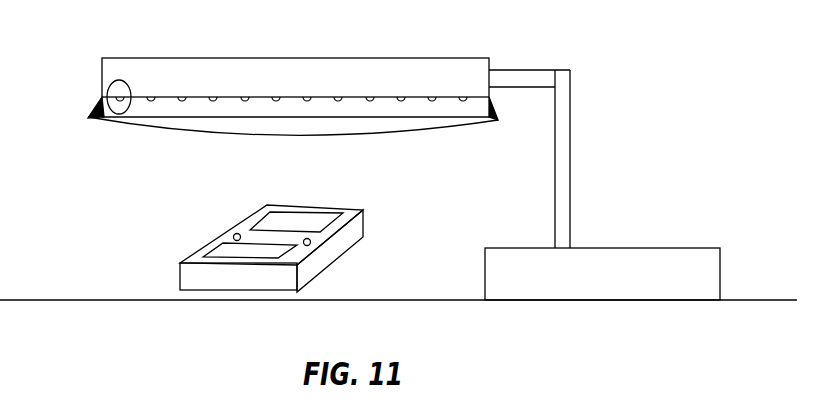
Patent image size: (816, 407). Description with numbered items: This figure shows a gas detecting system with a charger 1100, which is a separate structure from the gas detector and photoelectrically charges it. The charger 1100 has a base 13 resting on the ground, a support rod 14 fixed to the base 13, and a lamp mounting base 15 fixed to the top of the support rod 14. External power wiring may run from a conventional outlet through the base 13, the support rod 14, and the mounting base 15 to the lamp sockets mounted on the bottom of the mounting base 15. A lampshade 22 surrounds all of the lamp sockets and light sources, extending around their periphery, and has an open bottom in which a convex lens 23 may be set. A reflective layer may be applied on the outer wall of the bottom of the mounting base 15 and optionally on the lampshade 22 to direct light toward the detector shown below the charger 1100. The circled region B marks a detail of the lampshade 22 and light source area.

The charger 1100 is at (697, 85).
The lamp mounting base 15 is at (462, 70).
The lampshade 22 is at (497, 107).
The convex lens 23 is at (148, 126).
The support rod 14 is at (558, 178).
The base 13 is at (690, 281).
The detail region B is at (107, 100).